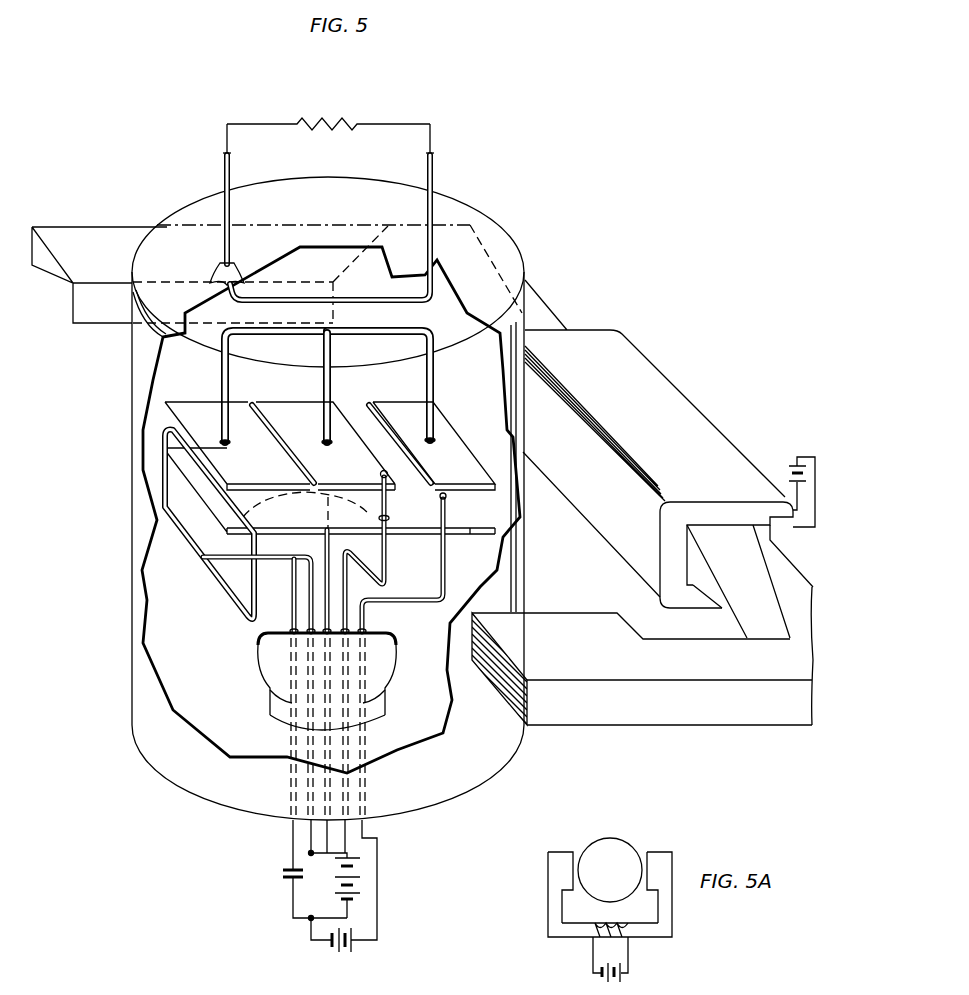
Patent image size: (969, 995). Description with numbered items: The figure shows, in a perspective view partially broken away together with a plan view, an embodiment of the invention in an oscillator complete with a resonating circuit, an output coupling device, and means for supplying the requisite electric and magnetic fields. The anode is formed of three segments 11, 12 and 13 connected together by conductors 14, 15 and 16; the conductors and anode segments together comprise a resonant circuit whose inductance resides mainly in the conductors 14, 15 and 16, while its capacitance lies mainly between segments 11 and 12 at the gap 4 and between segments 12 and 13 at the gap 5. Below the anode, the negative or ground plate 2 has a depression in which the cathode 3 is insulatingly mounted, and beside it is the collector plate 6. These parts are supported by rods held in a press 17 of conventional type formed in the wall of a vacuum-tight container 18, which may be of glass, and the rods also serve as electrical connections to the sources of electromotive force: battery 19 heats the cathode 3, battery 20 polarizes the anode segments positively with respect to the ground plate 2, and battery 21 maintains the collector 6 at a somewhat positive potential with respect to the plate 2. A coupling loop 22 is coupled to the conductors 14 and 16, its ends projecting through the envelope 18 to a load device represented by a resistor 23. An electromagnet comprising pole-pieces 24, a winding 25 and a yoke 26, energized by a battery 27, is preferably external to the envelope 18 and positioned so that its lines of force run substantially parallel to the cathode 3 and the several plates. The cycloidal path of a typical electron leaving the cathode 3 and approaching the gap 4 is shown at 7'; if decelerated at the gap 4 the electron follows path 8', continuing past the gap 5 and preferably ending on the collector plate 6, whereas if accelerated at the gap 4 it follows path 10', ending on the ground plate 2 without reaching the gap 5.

In FIG. 5, the ground plate 2 is at (413, 534).
In FIG. 5, the cathode 3 is at (210, 490).
In FIG. 5, the gap 4 is at (246, 416).
In FIG. 5, the gap 5 is at (355, 414).
In FIG. 5, the collector plate 6 is at (470, 536).
In FIG. 5, the cycloidal path 7' is at (274, 516).
In FIG. 5, the electron path 8' is at (404, 562).
In FIG. 5, the electron path 10' is at (360, 552).
In FIG. 5, the anode segment 11 is at (184, 404).
In FIG. 5, the anode segment 12 is at (288, 412).
In FIG. 5, the anode segment 13 is at (465, 462).
In FIG. 5, the conductor 14 is at (223, 372).
In FIG. 5, the conductor 15 is at (325, 370).
In FIG. 5, the conductor 16 is at (430, 370).
In FIG. 5, the press 17 is at (396, 636).
In FIG. 5, the vacuum-tight container 18 is at (527, 507).
In FIG. 5A, the vacuum-tight container 18 is at (615, 840).
In FIG. 5, the battery 19 is at (290, 872).
In FIG. 5, the battery 20 is at (360, 878).
In FIG. 5, the battery 21 is at (337, 943).
In FIG. 5, the coupling loop 22 is at (228, 288).
In FIG. 5, the resistor 23 is at (330, 120).
In FIG. 5, the pole-piece 24 is at (103, 313).
In FIG. 5A, the pole-piece 24 is at (560, 860).
In FIG. 5, the winding 25 is at (632, 363).
In FIG. 5A, the winding 25 is at (627, 927).
In FIG. 5, the yoke 26 is at (540, 312).
In FIG. 5A, the yoke 26 is at (572, 928).
In FIG. 5, the battery 27 is at (792, 465).
In FIG. 5A, the battery 27 is at (616, 980).